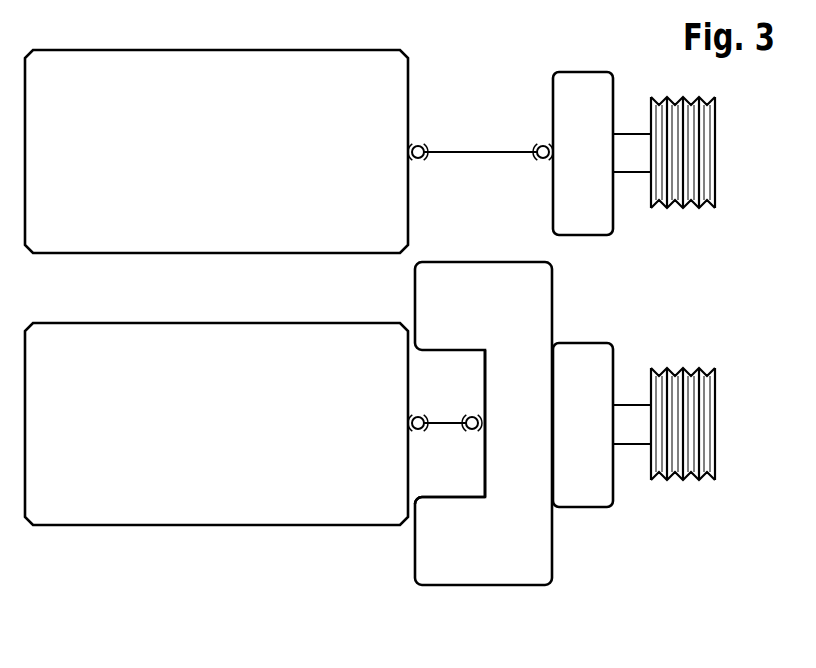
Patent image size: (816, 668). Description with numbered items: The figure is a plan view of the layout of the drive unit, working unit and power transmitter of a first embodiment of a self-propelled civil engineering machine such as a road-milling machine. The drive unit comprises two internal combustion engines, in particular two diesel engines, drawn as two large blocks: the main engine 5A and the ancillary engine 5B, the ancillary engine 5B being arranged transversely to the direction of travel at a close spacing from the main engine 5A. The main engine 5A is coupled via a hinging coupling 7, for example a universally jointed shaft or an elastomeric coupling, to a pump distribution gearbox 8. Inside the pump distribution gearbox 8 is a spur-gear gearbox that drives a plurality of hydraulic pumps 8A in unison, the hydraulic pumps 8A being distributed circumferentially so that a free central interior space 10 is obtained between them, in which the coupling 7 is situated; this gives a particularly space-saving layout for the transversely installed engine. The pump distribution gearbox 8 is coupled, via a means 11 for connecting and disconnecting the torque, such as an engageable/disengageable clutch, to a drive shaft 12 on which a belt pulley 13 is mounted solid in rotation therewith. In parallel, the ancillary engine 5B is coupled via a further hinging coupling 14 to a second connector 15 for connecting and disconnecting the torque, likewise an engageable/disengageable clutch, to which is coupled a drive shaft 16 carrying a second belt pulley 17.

The main engine 5A is at (215, 510).
The ancillary engine 5B is at (215, 240).
The hinging coupling 7 is at (445, 423).
The pump distribution gearbox 8 is at (517, 575).
The hydraulic pumps 8A is at (451, 575).
The free central interior space 10 is at (485, 378).
The means for connecting/disconnecting the torque 11 is at (582, 497).
The drive shaft 12 is at (632, 430).
The belt pulley 13 is at (700, 427).
The further hinging coupling 14 is at (478, 150).
The second connector for connecting/disconnecting the torque 15 is at (583, 225).
The drive shaft 16 is at (632, 157).
The second belt pulley 17 is at (702, 150).